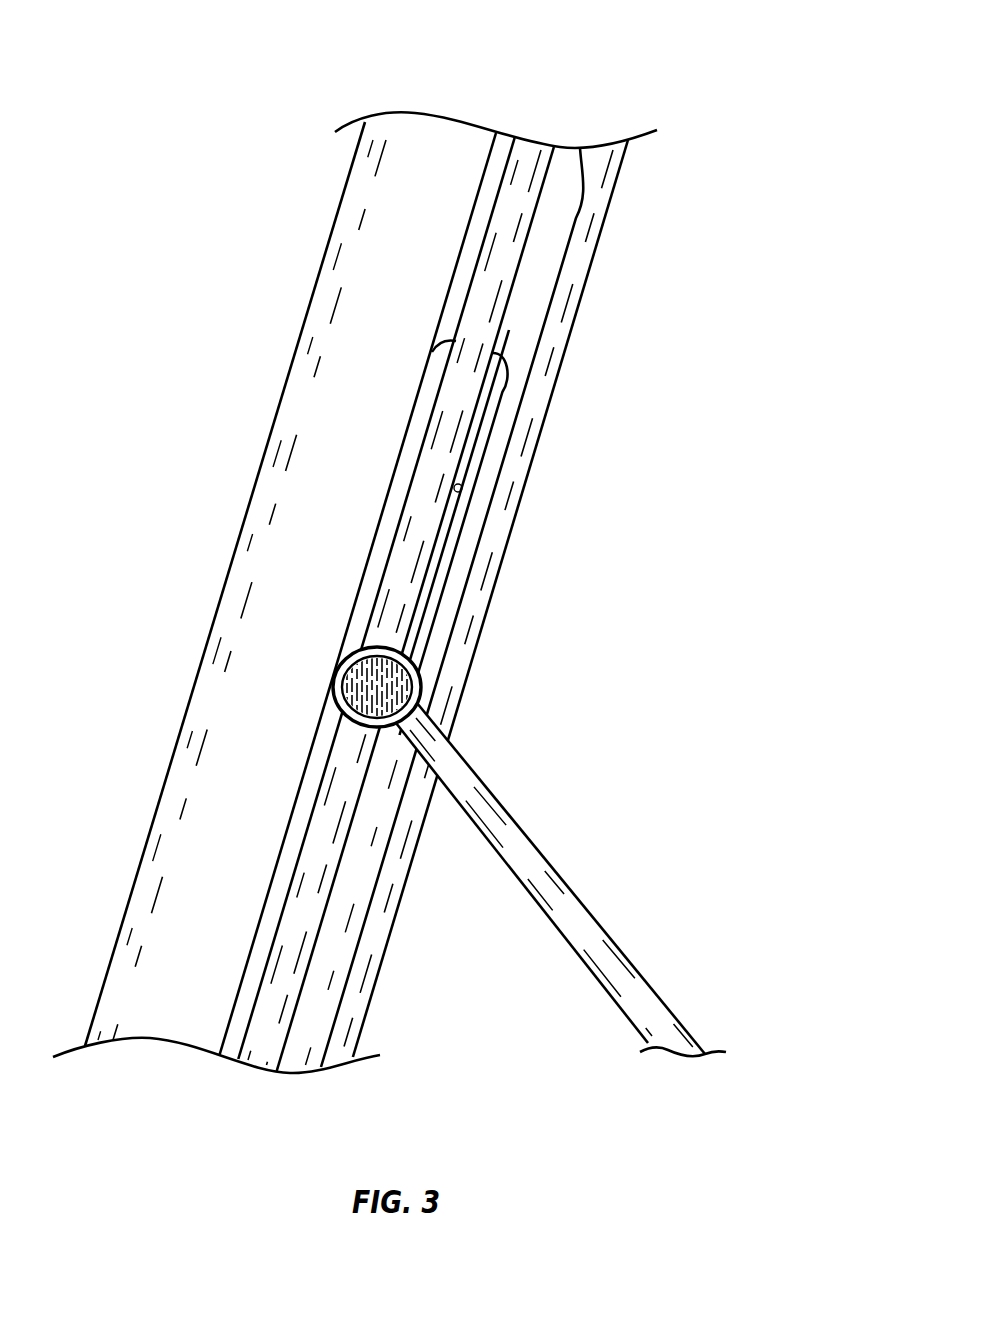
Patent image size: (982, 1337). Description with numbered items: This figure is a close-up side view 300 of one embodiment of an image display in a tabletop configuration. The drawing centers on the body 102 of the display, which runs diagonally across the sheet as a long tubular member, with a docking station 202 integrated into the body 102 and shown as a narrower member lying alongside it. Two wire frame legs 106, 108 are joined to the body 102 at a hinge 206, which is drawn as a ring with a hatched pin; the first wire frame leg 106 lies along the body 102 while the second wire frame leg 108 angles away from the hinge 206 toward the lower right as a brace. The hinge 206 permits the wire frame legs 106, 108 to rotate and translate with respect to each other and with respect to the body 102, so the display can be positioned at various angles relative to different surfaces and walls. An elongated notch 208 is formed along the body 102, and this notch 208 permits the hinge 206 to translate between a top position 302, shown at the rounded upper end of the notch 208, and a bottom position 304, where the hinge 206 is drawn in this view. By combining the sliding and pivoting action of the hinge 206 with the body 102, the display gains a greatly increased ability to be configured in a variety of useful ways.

The close-up side view 300 is at (176, 64).
The body 102 is at (428, 128).
The wire frame leg 106 is at (533, 147).
The docking station 202 is at (600, 162).
The top position 302 is at (496, 367).
The notch 208 is at (462, 487).
The hinge 206 is at (400, 690).
The bottom position 304 is at (338, 705).
The wire frame leg 108 is at (517, 850).